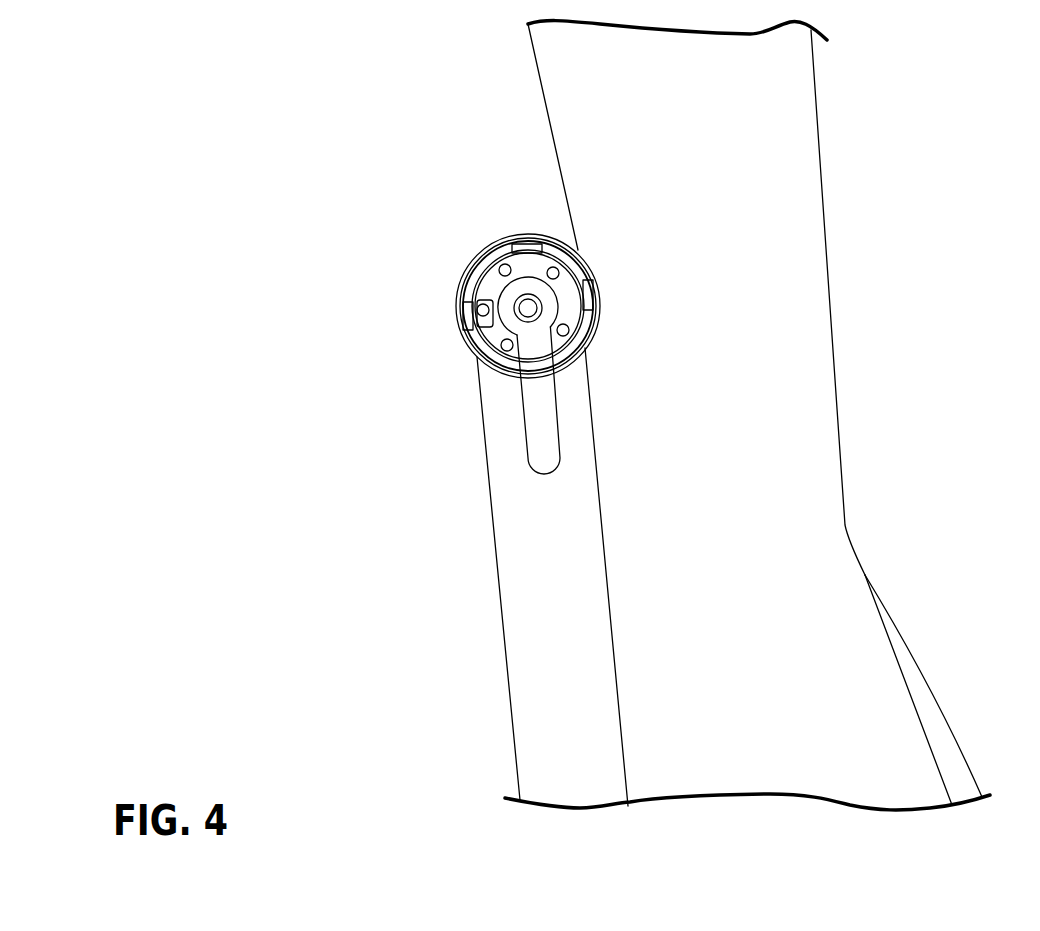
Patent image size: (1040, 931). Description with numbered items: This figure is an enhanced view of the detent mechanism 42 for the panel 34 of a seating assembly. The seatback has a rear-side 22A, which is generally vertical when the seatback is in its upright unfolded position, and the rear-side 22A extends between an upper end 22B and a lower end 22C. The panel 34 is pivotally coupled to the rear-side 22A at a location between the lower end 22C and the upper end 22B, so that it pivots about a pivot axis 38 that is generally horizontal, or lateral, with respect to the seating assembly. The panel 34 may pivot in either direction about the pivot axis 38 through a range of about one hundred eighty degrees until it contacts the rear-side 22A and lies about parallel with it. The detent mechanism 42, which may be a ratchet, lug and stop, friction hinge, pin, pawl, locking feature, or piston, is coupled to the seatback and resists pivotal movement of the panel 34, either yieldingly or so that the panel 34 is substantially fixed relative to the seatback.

The rear-side 22A is at (568, 183).
The upper end 22B is at (528, 24).
The lower end 22C is at (628, 805).
The panel 34 is at (552, 608).
The pivot axis 38 is at (527, 309).
The detent mechanism 42 is at (538, 435).